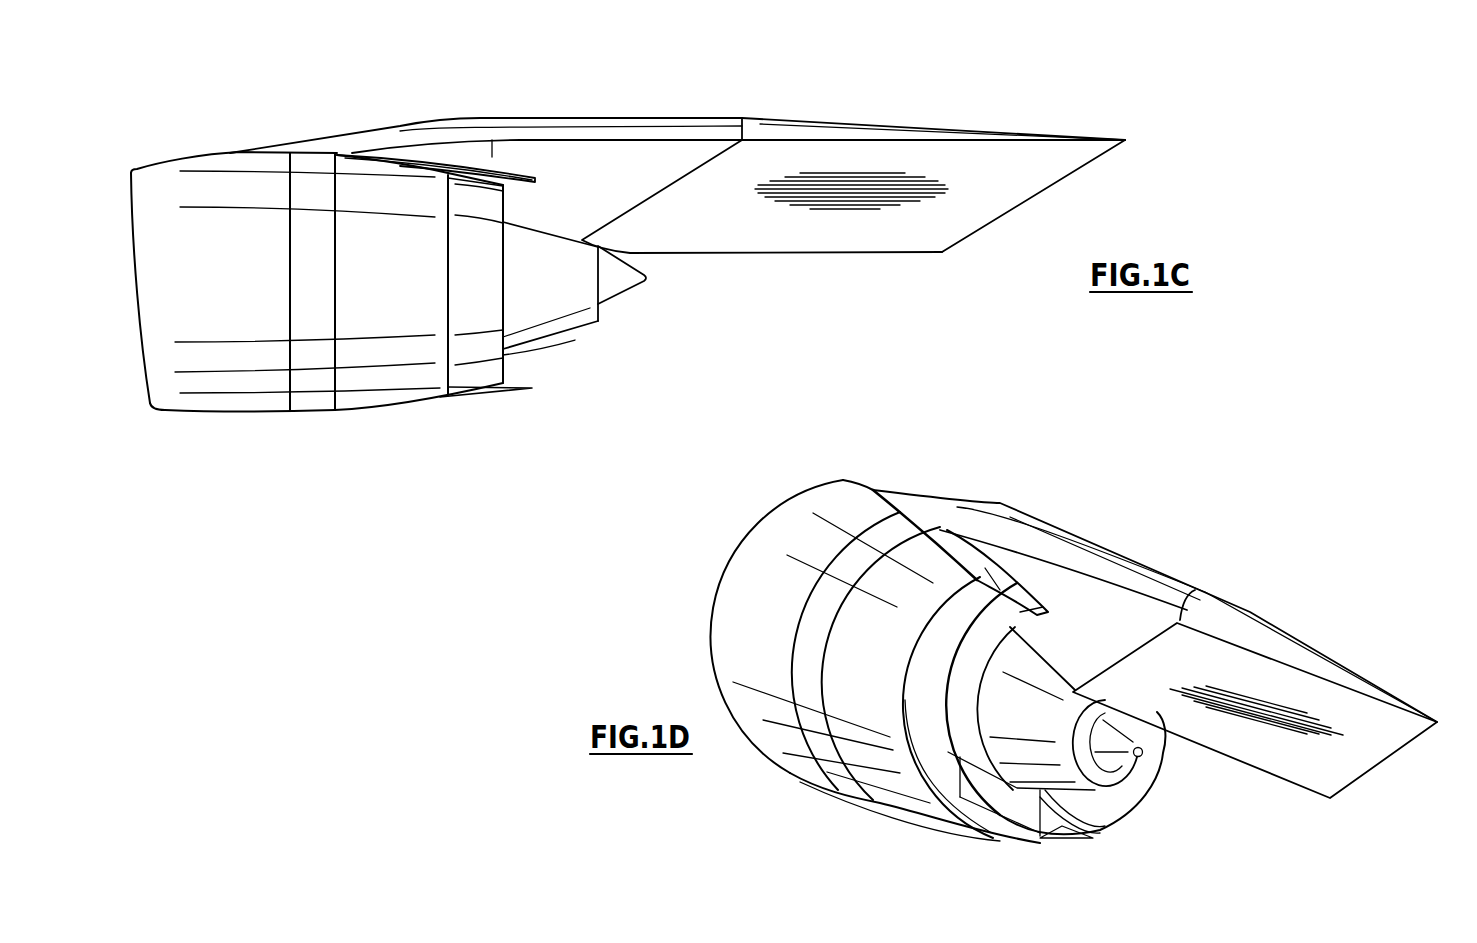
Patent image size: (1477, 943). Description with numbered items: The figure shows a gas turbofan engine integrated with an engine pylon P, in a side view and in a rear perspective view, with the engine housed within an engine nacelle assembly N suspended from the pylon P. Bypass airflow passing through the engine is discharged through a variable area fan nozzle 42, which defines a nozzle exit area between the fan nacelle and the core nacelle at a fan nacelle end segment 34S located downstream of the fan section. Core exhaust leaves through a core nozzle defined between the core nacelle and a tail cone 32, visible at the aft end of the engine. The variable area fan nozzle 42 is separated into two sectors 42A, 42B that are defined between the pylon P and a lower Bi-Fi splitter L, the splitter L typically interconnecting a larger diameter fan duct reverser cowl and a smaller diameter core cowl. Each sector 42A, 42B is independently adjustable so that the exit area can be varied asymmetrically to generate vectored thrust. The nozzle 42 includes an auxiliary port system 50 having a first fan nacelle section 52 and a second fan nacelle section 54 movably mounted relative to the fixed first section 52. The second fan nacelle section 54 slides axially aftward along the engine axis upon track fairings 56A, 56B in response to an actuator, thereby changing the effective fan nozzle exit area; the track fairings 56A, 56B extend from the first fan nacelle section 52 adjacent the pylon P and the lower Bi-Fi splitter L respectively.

In FIG. 1C, the engine nacelle assembly N is at (258, 430).
In FIG. 1D, the engine nacelle assembly N is at (763, 766).
In FIG. 1C, the engine pylon P is at (820, 157).
In FIG. 1D, the engine pylon P is at (1232, 628).
In FIG. 1C, the tail cone 32 is at (628, 298).
In FIG. 1D, the tail cone 32 is at (1148, 753).
In FIG. 1C, the fan nacelle end segment 34S is at (507, 366).
In FIG. 1C, the variable area fan nozzle 42 is at (465, 428).
In FIG. 1D, the first sector of the variable area fan nozzle 42A is at (940, 788).
In FIG. 1D, the second sector of the variable area fan nozzle 42B is at (1105, 800).
In FIG. 1C, the auxiliary port system 50 is at (457, 160).
In FIG. 1C, the first fan nacelle section 52 is at (420, 378).
In FIG. 1C, the second fan nacelle section 54 is at (489, 372).
In FIG. 1C, the track fairing 56A is at (505, 177).
In FIG. 1D, the track fairing 56A is at (1013, 587).
In FIG. 1C, the track fairing 56B is at (520, 387).
In FIG. 1D, the track fairing 56B is at (1075, 834).
In FIG. 1D, the lower Bi-Fi splitter L is at (1013, 800).